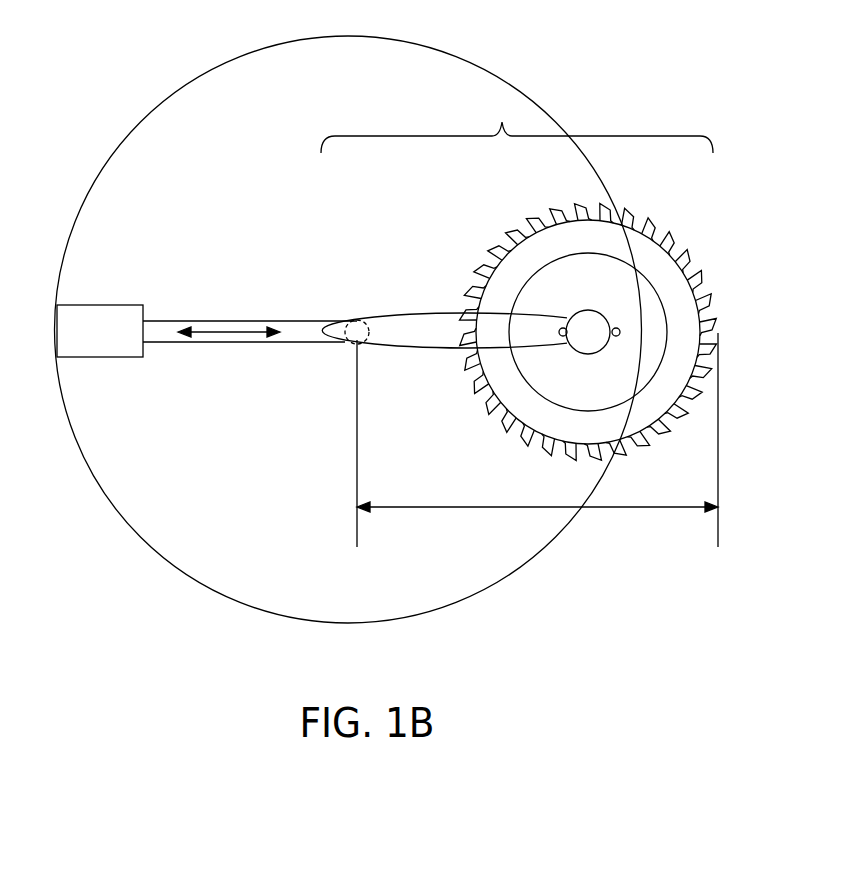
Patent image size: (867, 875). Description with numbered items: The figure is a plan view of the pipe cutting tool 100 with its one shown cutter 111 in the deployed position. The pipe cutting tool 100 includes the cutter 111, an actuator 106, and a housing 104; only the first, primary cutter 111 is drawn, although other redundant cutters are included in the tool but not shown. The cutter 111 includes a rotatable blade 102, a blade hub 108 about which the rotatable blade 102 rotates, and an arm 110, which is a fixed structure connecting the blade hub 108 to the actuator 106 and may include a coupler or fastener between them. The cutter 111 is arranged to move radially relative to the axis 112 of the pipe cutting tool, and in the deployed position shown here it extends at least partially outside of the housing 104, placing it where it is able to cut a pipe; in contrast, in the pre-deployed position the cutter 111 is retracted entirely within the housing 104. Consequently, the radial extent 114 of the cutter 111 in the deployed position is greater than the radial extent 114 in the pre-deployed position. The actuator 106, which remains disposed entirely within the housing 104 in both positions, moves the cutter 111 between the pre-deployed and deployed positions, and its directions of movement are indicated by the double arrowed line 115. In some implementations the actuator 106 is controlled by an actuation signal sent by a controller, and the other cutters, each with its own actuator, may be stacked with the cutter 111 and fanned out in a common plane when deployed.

The pipe cutting tool 100 is at (112, 112).
The rotatable blade 102 is at (503, 243).
The housing 104 is at (143, 540).
The actuator 106 is at (145, 294).
The blade hub 108 is at (585, 322).
The arm 110 is at (406, 312).
The cutter 111 is at (517, 119).
The axis 112 is at (348, 342).
The radial extent 114 is at (470, 512).
The double arrowed line 115 is at (232, 322).